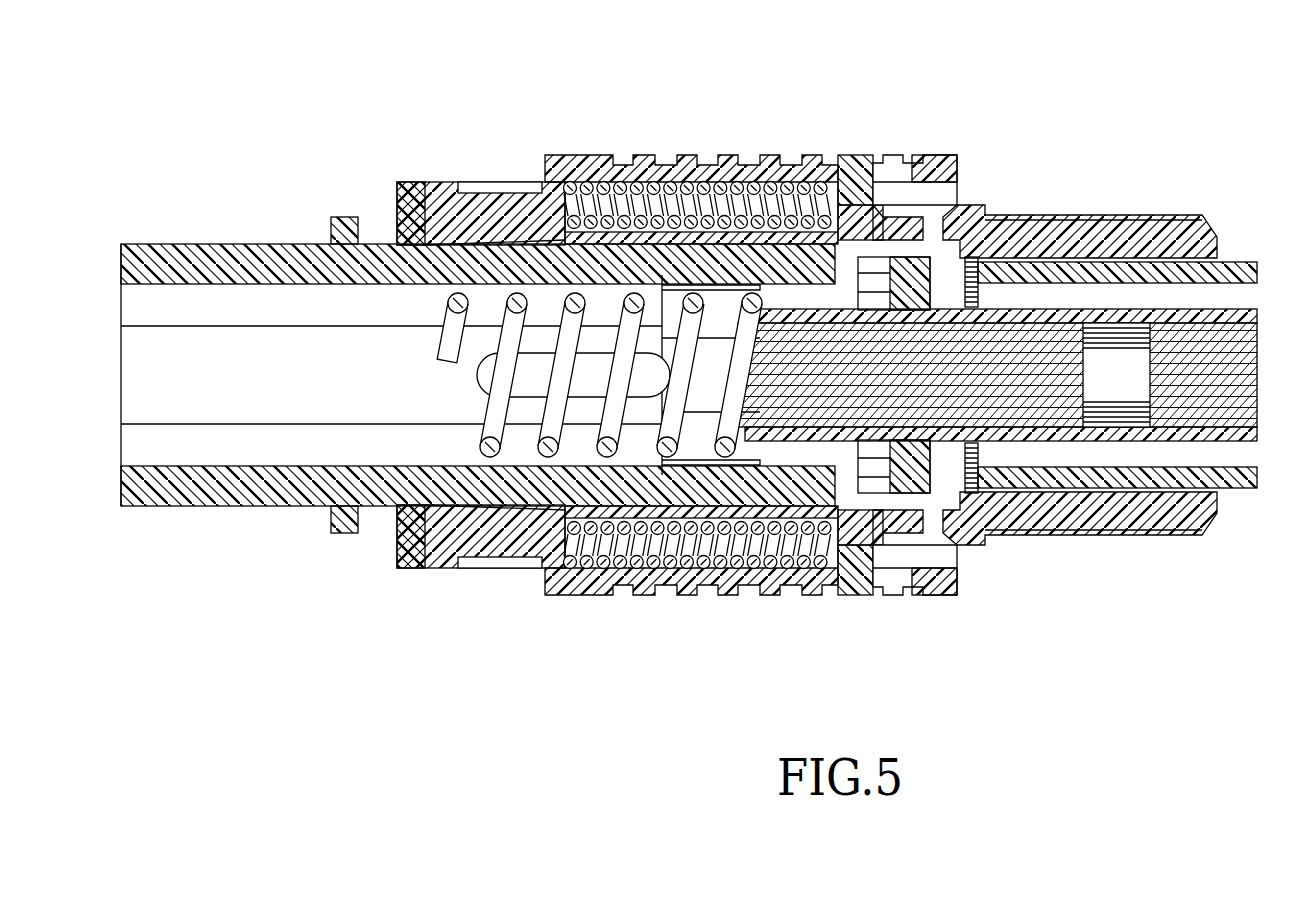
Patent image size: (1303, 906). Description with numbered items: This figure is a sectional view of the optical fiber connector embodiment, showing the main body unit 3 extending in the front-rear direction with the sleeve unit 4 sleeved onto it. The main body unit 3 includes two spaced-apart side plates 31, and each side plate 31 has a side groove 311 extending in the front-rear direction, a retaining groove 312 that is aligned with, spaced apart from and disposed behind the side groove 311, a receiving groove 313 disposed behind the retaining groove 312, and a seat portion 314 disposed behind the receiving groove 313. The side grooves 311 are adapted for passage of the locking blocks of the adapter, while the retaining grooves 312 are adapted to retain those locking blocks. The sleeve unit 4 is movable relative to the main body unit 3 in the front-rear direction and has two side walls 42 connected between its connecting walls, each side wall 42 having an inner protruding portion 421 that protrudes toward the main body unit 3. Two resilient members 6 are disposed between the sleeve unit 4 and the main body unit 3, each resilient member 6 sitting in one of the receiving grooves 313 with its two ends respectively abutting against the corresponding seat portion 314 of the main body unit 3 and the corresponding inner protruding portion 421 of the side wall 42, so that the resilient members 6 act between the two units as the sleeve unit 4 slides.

The main body unit 3 is at (270, 158).
The sleeve unit 4 is at (693, 128).
The resilient member 6 is at (770, 187).
The side plate 31 is at (1081, 200).
The side groove 311 is at (1137, 223).
The retaining groove 312 is at (920, 215).
The receiving groove 313 is at (613, 197).
The seat portion 314 is at (502, 198).
The side wall 42 is at (650, 160).
The inner protruding portion 421 is at (858, 197).